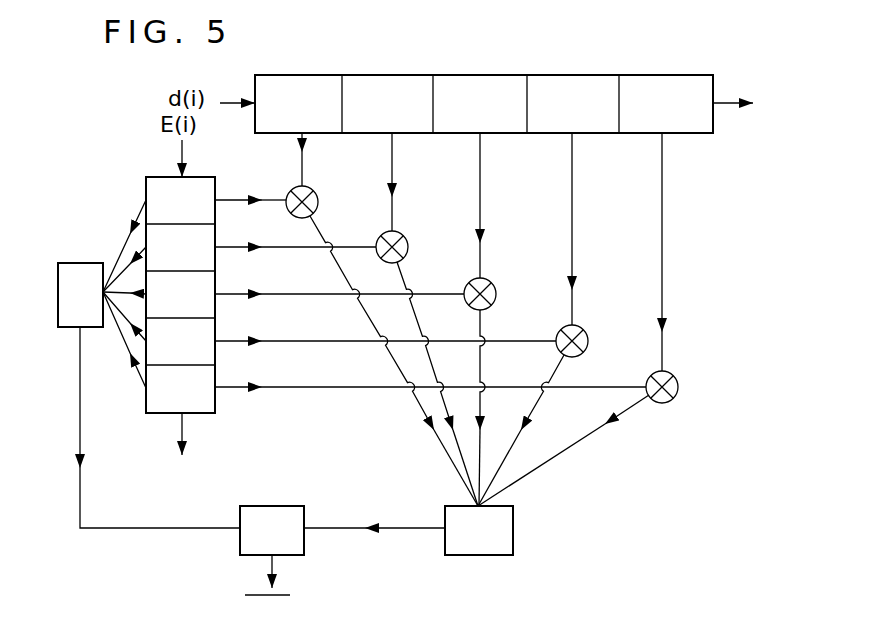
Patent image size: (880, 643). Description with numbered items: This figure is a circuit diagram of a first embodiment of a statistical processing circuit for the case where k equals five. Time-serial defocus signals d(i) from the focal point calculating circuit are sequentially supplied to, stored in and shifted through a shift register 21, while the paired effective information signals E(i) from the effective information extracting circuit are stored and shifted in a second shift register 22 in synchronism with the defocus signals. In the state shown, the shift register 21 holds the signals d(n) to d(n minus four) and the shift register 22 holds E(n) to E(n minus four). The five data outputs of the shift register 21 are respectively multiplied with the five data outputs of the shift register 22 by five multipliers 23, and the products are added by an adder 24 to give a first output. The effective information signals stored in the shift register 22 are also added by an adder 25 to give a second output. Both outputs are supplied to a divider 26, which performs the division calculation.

The shift register 21 is at (572, 75).
The shift register 22 is at (160, 415).
The multipliers 23 is at (314, 197).
The adder 24 is at (514, 530).
The adder 25 is at (80, 263).
The divider 26 is at (281, 506).